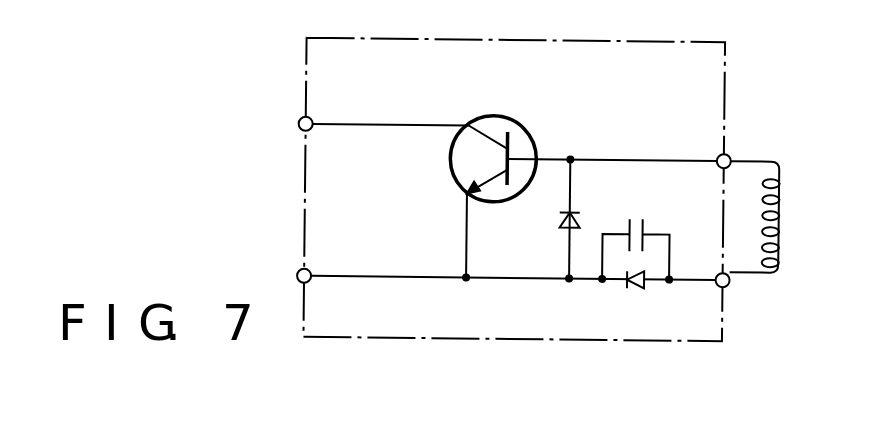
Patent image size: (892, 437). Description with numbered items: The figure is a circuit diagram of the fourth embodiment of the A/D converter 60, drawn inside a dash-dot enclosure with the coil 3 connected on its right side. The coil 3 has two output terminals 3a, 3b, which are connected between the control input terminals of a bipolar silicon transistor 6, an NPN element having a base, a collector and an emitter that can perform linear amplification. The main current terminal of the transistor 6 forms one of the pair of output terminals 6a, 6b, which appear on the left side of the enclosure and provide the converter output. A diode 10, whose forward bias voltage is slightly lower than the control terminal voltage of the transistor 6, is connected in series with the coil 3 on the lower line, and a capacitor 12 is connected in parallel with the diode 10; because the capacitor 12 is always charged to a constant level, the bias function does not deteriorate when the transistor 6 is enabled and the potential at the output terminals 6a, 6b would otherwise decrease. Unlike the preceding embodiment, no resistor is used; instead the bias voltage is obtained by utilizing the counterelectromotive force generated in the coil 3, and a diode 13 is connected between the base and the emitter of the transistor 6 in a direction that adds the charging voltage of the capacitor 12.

The A/D converter 60 is at (498, 341).
The bipolar silicon transistor 6 is at (516, 122).
The output terminal 6a is at (298, 275).
The output terminal 6b is at (298, 122).
The coil 3 is at (781, 207).
The output terminal of the coil 3a is at (729, 154).
The output terminal of the coil 3b is at (729, 284).
The diode 10 is at (633, 290).
The capacitor 12 is at (637, 215).
The diode 13 is at (559, 213).